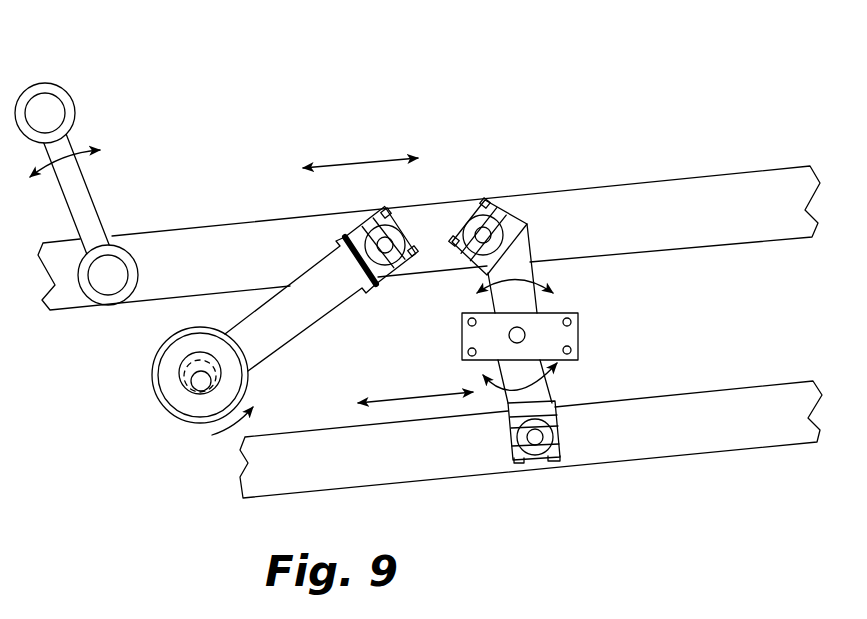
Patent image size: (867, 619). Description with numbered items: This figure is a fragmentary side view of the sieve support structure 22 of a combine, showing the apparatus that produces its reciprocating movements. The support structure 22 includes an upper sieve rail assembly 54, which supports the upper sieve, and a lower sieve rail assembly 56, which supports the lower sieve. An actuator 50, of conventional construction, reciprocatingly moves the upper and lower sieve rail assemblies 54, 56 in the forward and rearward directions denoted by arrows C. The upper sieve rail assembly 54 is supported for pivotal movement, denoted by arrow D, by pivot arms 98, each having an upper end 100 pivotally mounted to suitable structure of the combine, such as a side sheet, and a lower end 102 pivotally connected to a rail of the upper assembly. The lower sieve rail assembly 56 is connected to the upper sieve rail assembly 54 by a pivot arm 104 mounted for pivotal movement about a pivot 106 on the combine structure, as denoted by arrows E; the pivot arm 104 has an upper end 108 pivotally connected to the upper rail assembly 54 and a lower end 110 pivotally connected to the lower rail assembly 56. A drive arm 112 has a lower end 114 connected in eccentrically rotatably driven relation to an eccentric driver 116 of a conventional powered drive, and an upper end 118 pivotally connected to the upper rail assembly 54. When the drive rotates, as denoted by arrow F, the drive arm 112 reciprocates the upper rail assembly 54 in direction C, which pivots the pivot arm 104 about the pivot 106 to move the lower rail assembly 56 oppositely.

The sieve support structure 22 is at (675, 146).
The upper sieve rail assembly 54 is at (735, 172).
The lower sieve rail assembly 56 is at (763, 383).
The actuator 50 is at (168, 412).
The pivot arm 98 is at (93, 193).
The upper end of pivot arm 100 is at (73, 91).
The lower end of pivot arm 102 is at (82, 300).
The pivot arm 104 is at (537, 303).
The pivot 106 is at (578, 335).
The upper end of pivot arm 108 is at (527, 224).
The lower end of pivot arm 110 is at (560, 441).
The drive arm 112 is at (278, 346).
The lower end of drive arm 114 is at (152, 388).
The eccentric driver 116 is at (183, 392).
The upper end of drive arm 118 is at (408, 236).
The arrows C is at (362, 157).
The arrow D is at (72, 163).
The arrows E is at (517, 280).
The arrow F is at (232, 448).